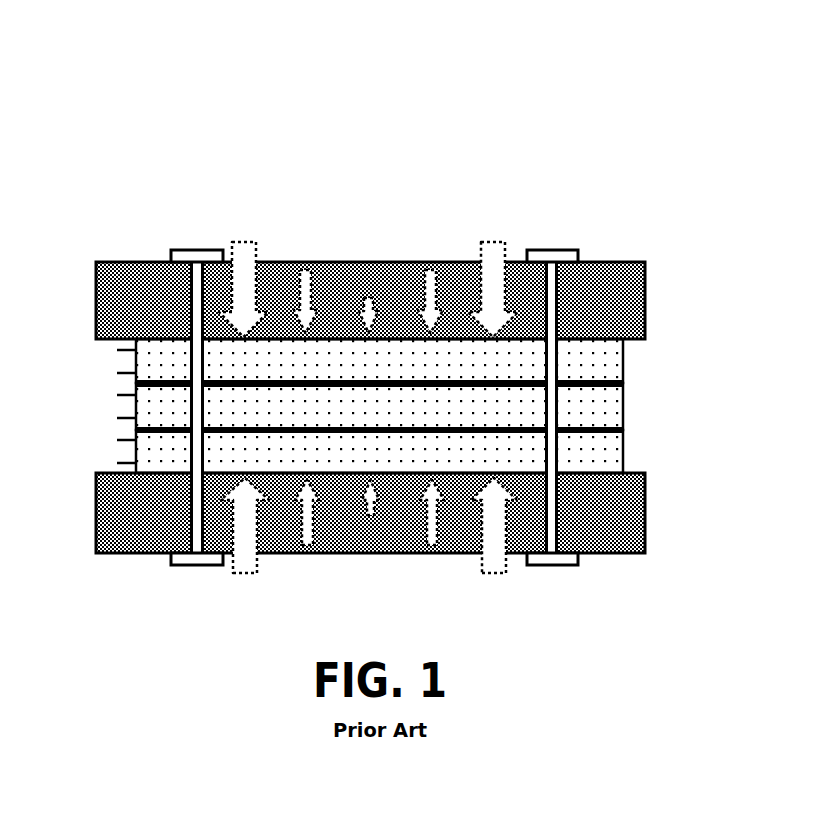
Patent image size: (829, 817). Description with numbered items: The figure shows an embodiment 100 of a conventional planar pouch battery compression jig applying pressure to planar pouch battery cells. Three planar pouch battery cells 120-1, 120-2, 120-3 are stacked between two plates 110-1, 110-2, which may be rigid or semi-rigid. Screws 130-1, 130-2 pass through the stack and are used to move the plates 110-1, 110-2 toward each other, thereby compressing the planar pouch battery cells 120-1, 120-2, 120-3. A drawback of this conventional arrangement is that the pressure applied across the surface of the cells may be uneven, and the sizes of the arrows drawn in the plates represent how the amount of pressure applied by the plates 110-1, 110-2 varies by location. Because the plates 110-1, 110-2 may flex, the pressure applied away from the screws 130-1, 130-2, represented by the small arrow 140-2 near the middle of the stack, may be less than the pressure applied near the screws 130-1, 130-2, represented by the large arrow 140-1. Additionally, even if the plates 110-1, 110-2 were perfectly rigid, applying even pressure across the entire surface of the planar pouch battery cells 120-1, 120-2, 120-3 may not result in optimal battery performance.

The embodiment of a conventional planar pouch battery compression jig 100 is at (64, 99).
The plate 110-1 is at (120, 262).
The plate 110-2 is at (127, 553).
The planar pouch battery cell 120-1 is at (623, 363).
The planar pouch battery cell 120-2 is at (623, 410).
The planar pouch battery cell 120-3 is at (623, 457).
The screw 130-1 is at (207, 250).
The screw 130-2 is at (562, 250).
The arrow 140-1 is at (247, 240).
The arrow 140-2 is at (367, 300).